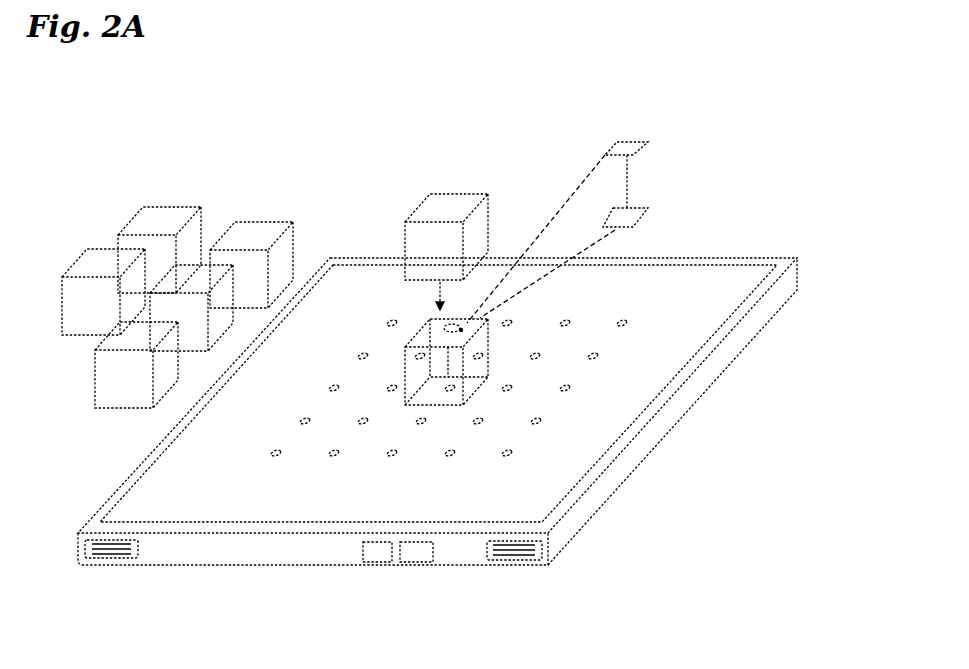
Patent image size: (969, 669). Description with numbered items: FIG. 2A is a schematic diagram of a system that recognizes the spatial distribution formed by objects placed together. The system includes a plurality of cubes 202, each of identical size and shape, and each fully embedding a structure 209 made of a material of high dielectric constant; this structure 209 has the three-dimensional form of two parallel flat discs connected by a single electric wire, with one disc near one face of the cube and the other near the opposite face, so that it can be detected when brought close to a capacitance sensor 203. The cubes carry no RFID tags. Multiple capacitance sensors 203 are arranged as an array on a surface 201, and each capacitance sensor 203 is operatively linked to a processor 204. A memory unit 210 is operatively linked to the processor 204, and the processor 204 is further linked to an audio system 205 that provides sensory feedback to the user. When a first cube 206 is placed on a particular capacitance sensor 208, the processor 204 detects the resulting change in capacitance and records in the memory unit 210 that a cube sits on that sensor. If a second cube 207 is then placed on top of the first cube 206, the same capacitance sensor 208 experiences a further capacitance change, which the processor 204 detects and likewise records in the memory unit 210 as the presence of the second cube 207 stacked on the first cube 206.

The surface 201 is at (793, 253).
The cubes 202 is at (253, 240).
The capacitance sensor 203 is at (570, 326).
The processor 204 is at (375, 550).
The audio system 205 is at (562, 588).
The first cube 206 is at (430, 330).
The second cube 207 is at (442, 203).
The capacitance sensor 208 is at (455, 390).
The structure of high dielectric constant material 209 is at (607, 143).
The memory unit 210 is at (425, 550).